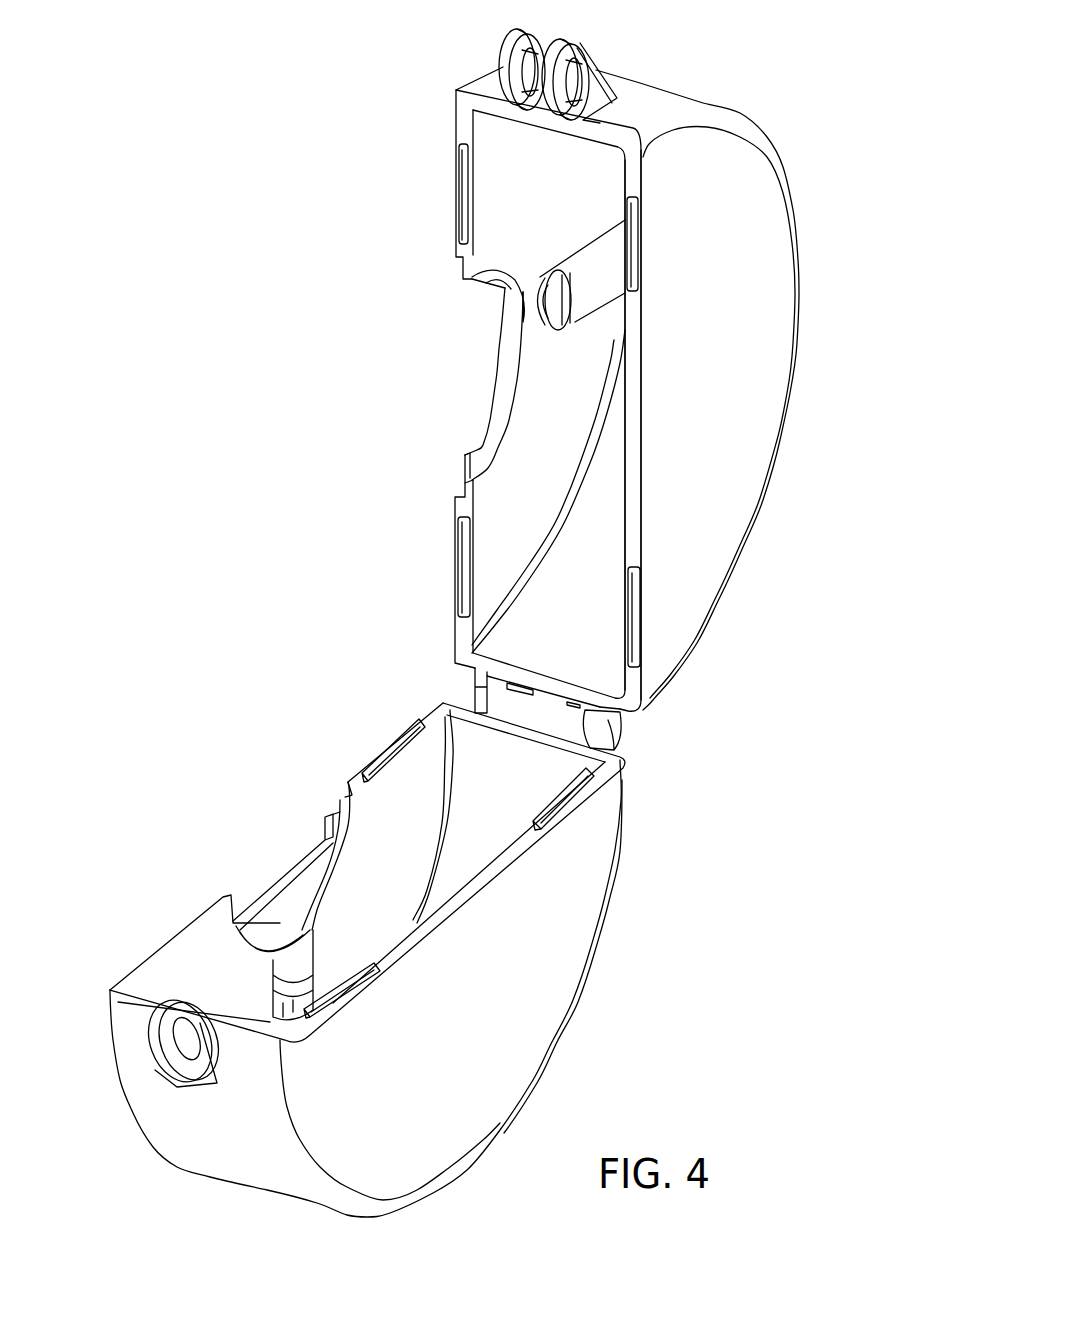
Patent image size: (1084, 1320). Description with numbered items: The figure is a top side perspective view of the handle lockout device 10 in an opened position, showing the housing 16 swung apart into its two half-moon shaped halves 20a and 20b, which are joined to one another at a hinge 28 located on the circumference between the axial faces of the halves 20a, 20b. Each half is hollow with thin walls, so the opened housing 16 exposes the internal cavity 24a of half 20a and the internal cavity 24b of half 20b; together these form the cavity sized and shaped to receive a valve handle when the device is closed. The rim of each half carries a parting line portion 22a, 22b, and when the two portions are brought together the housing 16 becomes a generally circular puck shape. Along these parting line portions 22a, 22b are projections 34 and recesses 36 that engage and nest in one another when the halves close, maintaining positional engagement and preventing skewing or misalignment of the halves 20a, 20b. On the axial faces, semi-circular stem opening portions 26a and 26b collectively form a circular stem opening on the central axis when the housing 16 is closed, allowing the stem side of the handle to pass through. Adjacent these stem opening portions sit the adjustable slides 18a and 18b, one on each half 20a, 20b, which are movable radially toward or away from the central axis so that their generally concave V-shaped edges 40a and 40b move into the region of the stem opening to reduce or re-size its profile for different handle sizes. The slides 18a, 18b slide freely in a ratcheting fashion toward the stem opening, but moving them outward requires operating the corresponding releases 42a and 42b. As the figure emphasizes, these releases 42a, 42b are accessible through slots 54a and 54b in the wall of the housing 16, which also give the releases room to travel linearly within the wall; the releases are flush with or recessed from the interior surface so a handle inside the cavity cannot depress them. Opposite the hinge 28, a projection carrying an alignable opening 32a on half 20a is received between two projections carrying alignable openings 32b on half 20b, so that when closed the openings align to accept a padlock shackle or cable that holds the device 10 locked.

The handle lockout device 10 is at (250, 390).
The housing 16 is at (686, 686).
The adjustable slide 18a is at (310, 890).
The adjustable slide 18b is at (497, 293).
The half 20a is at (555, 980).
The half 20b is at (740, 535).
The parting line portion 22a is at (443, 897).
The parting line portion 22b is at (633, 450).
The internal cavity 24a is at (388, 798).
The internal cavity 24b is at (493, 558).
The stem opening portion 26a is at (338, 857).
The stem opening portion 26b is at (497, 447).
The hinge 28 is at (512, 702).
The alignable opening 32a is at (177, 1050).
The alignable openings 32b is at (575, 82).
The projections 34 is at (633, 245).
The recesses 36 is at (636, 622).
The edge 40a is at (255, 920).
The edge 40b is at (490, 397).
The release 42a is at (300, 975).
The release 42b is at (553, 328).
The slot 54a is at (280, 1013).
The slot 54b is at (560, 290).